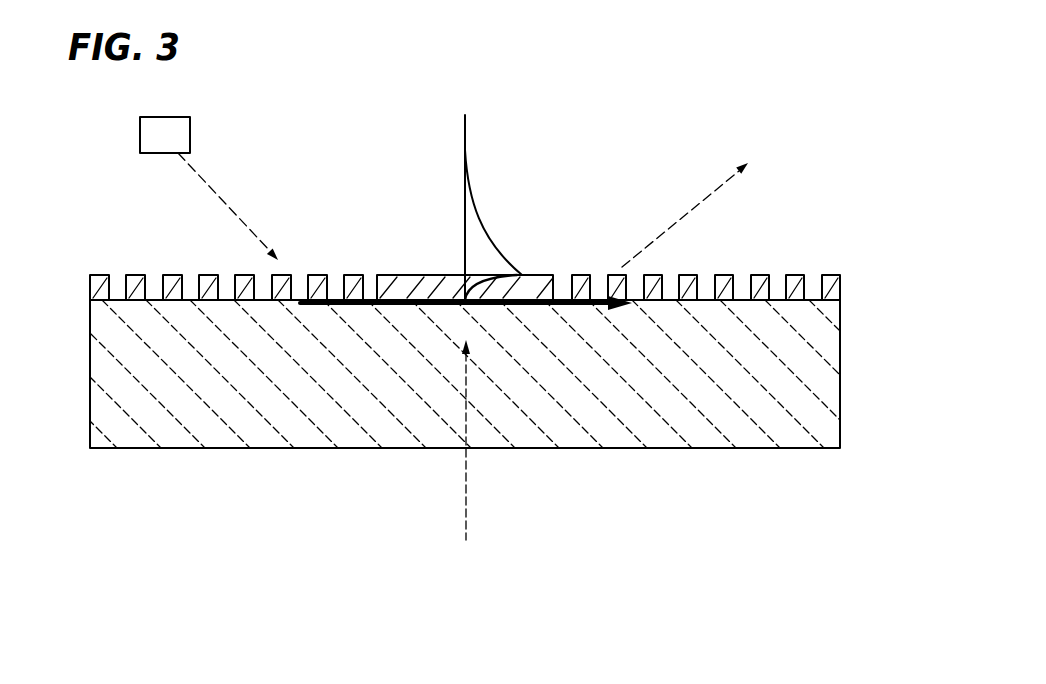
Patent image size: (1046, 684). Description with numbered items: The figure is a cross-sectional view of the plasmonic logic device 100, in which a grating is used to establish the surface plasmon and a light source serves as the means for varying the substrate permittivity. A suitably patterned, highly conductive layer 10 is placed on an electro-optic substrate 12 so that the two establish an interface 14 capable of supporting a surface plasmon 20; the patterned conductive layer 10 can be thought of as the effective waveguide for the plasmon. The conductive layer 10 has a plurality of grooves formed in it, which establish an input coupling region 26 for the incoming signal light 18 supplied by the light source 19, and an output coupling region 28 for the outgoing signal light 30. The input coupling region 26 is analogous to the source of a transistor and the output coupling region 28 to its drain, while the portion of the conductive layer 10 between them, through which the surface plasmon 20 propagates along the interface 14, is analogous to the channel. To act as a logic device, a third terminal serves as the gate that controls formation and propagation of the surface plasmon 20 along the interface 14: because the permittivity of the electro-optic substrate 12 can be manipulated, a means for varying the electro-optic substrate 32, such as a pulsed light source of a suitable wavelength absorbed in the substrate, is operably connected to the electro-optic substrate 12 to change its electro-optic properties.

The device 100 is at (748, 85).
The conductive layer 10 is at (388, 275).
The electro-optic substrate 12 is at (148, 403).
The interface 14 is at (830, 300).
The signal light 18 is at (203, 182).
The light source 19 is at (190, 132).
The surface plasmon 20 is at (430, 305).
The input coupling region 26 is at (90, 286).
The output coupling region 28 is at (832, 276).
The outgoing signal light 30 is at (698, 203).
The means for varying the electro-optic substrate 32 is at (467, 500).